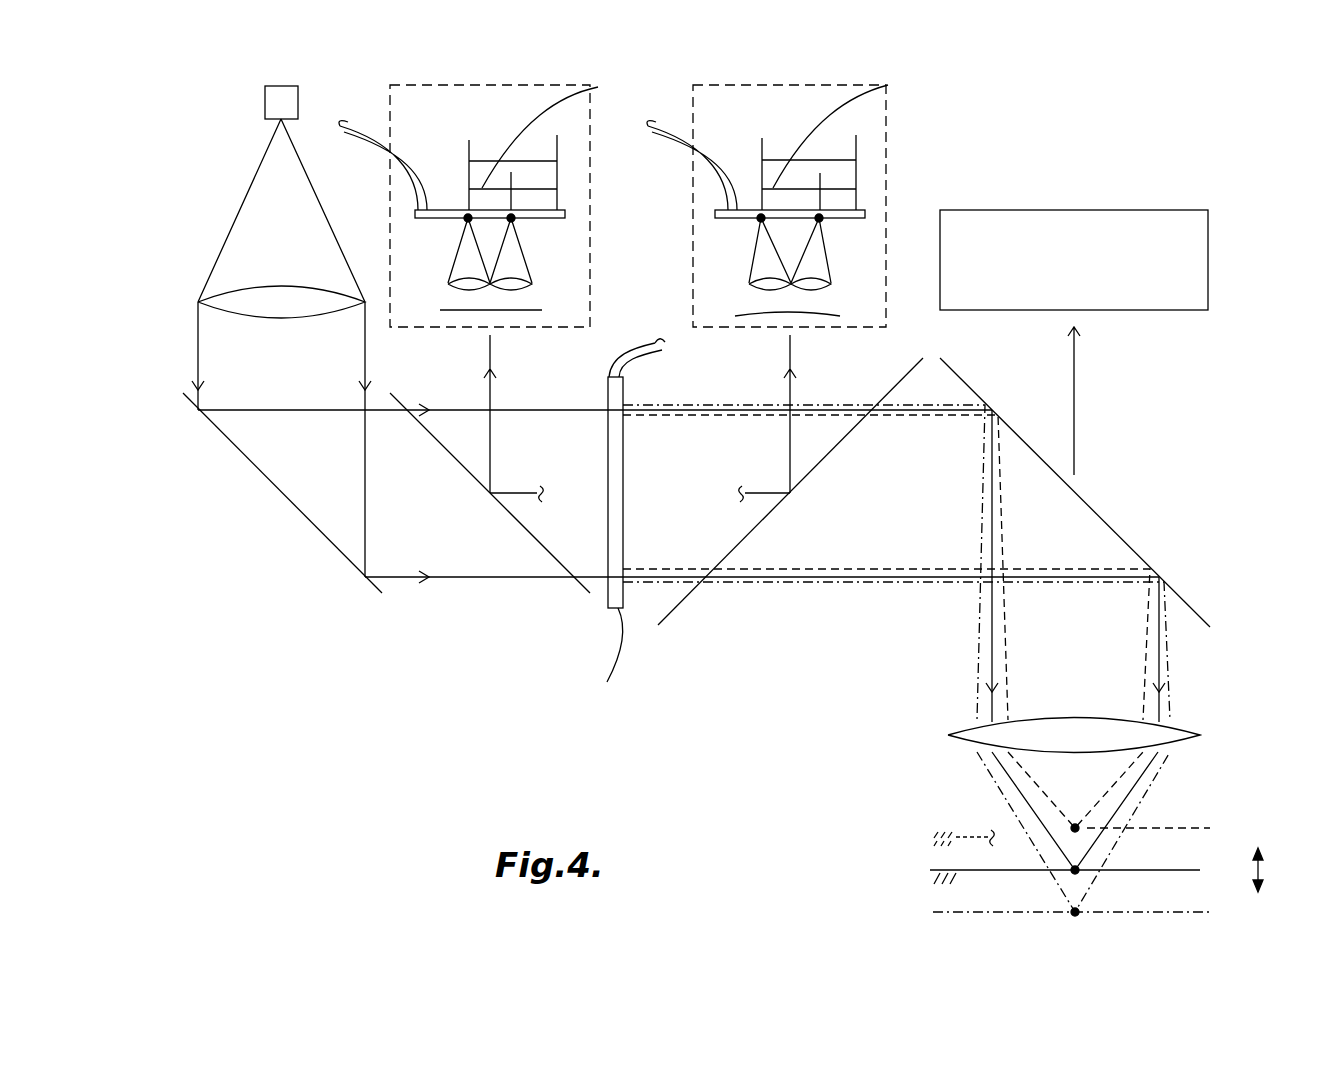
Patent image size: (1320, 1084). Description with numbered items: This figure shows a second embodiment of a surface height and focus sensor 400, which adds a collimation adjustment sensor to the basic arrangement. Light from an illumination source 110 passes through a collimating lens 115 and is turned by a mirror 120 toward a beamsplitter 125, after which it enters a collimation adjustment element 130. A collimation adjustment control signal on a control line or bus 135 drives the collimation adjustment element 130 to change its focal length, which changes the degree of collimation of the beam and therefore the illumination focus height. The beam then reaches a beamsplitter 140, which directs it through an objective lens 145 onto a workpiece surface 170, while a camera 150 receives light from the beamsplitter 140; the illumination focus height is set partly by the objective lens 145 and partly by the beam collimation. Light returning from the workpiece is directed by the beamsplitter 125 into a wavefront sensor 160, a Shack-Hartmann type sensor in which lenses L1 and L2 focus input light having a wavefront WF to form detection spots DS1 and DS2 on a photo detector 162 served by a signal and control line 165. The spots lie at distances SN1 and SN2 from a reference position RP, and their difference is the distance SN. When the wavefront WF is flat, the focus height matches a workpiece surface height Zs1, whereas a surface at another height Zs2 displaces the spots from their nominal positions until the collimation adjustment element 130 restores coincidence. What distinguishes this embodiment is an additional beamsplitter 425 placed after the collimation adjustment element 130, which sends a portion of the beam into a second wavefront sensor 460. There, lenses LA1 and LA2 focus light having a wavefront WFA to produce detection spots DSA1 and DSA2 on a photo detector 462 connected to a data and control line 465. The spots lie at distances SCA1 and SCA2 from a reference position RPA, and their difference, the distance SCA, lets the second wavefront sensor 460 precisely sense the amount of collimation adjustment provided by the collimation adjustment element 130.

The surface height and focus sensor 400 is at (213, 771).
The illumination source 110 is at (262, 96).
The collimating lens 115 is at (255, 300).
The mirror 120 is at (315, 526).
The beamsplitter 125 is at (521, 524).
The collimation adjustment element 130 is at (623, 527).
The control line or bus 135 is at (662, 352).
The beamsplitter 140 is at (1110, 527).
The objective lens 145 is at (948, 735).
The camera 150 is at (1192, 210).
The wavefront sensor 160 is at (503, 216).
The photo detector 162 is at (567, 214).
The signal and control line 165 is at (364, 144).
The workpiece surface 170 is at (1013, 872).
The beamsplitter 425 is at (857, 425).
The second wavefront sensor 460 is at (793, 217).
The photo detector 462 is at (714, 214).
The data and control line 465 is at (670, 140).
The distance Δ SN is at (563, 131).
The distance Δ SCA is at (865, 131).
The reference position RP is at (557, 141).
The reference position RPA is at (856, 141).
The distance SN1 is at (542, 189).
The distance SN2 is at (542, 161).
The distance SCA1 is at (835, 189).
The distance SCA2 is at (835, 160).
The detection spot DS1 is at (515, 223).
The detection spot DS2 is at (464, 223).
The detection spot DSA1 is at (823, 223).
The detection spot DSA2 is at (757, 223).
The lens L1 is at (531, 289).
The lens L2 is at (450, 289).
The lens LA1 is at (830, 289).
The lens LA2 is at (750, 289).
The wavefront WF is at (500, 312).
The wavefront WFA is at (805, 316).
The workpiece surface height Zs1 is at (908, 873).
The workpiece surface height Zs2 is at (908, 838).